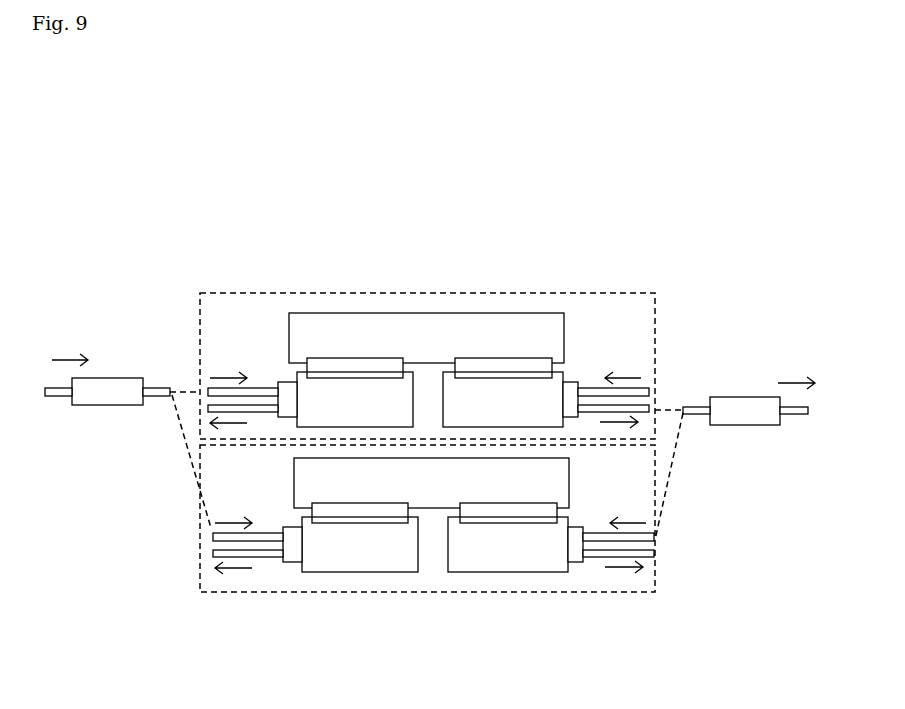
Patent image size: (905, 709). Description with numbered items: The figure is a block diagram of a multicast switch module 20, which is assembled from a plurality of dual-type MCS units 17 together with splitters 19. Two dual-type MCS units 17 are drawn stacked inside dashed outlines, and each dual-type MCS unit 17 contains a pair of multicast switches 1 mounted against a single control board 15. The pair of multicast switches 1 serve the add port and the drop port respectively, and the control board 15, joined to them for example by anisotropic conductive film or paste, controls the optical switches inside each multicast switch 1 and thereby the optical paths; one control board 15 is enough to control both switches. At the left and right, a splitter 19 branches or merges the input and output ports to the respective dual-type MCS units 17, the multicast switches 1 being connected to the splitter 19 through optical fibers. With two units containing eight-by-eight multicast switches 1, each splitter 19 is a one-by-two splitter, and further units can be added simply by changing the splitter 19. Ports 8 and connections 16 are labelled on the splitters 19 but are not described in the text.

The multicast switch module 20 is at (445, 134).
The dual-type MCS unit 17 is at (315, 292).
The control board 15 is at (360, 325).
The multicast switch 1 is at (395, 387).
The splitter 19 is at (113, 380).
The connection pipe 8 is at (426, 393).
The connection pipe 16 is at (426, 456).